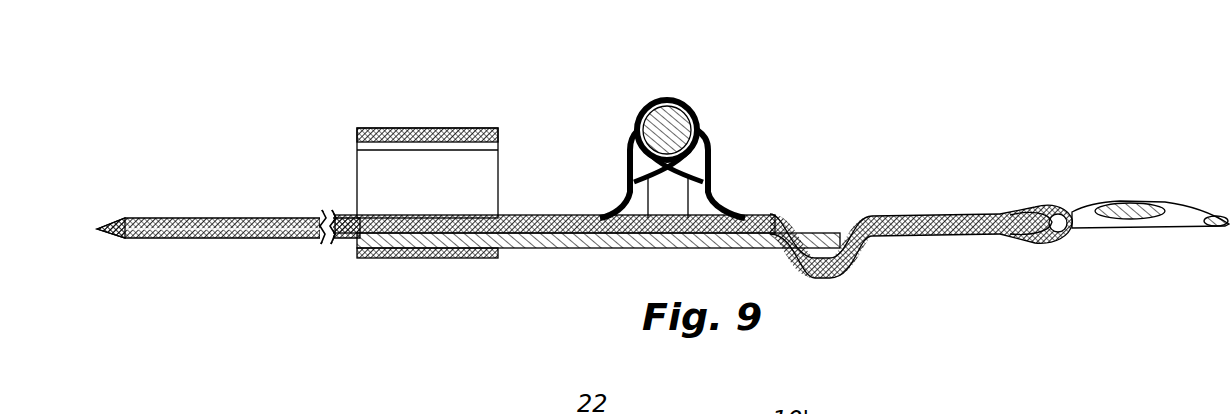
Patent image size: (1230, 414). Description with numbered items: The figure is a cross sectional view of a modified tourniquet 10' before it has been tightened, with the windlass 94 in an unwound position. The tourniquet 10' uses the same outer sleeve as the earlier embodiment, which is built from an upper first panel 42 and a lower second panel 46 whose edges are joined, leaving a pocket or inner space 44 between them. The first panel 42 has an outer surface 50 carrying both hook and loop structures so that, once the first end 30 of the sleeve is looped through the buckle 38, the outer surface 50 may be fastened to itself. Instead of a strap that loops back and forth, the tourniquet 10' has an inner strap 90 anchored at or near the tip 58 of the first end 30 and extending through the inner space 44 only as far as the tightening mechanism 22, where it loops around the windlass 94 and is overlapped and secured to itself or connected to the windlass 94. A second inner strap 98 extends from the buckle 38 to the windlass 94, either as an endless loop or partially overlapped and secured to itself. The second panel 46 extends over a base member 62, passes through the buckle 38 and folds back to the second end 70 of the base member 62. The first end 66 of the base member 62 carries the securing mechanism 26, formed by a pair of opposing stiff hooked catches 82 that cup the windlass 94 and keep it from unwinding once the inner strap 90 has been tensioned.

The tourniquet 10' is at (662, 140).
The tightening mechanism 22 is at (660, 88).
The securing mechanism 26 is at (350, 125).
The first end 30 is at (146, 186).
The buckle 38 is at (1077, 202).
The first panel 42 is at (180, 218).
The inner space 44 is at (331, 210).
The second panel 46 is at (170, 240).
The outer surface 50 is at (250, 215).
The tip 58 is at (101, 236).
The base member 62 is at (555, 250).
The first end 66 is at (428, 262).
The second end 70 is at (798, 165).
The hooked catches 82 is at (480, 174).
The inner strap 90 is at (628, 150).
The windlass 94 is at (674, 118).
The inner strap 98 is at (712, 162).